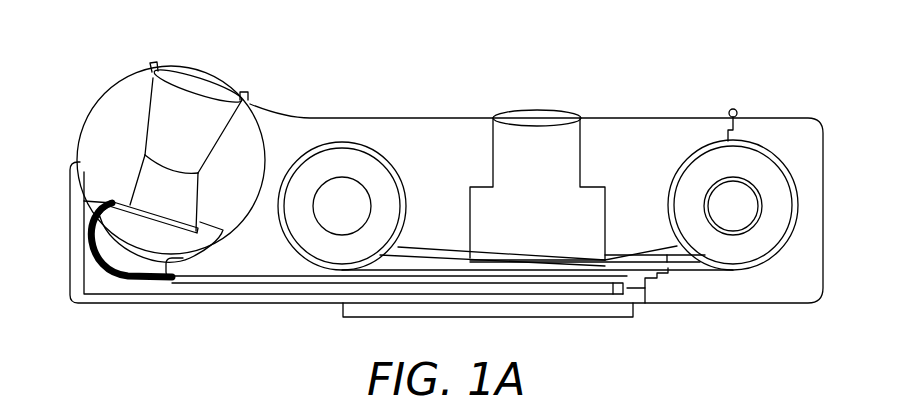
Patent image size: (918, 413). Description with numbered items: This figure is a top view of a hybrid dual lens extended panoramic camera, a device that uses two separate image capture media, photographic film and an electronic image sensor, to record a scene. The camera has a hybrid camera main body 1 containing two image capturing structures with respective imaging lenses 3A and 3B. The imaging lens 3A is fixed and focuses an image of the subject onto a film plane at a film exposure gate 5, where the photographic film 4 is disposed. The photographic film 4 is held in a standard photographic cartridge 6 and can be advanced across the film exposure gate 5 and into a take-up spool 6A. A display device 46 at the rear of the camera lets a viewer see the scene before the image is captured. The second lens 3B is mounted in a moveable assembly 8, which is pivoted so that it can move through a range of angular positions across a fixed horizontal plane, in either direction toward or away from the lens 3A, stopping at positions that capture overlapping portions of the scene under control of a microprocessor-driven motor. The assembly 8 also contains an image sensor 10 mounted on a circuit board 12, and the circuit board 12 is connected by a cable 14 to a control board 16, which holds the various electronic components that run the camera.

The hybrid camera main body 1 is at (660, 130).
The imaging lens 3A is at (547, 110).
The imaging lens 3B is at (196, 78).
The photographic film 4 is at (540, 266).
The film exposure gate 5 is at (546, 222).
The photographic cartridge 6 is at (767, 258).
The take-up spool 6A is at (360, 153).
The moveable assembly 8 is at (120, 110).
The image sensor 10 is at (223, 230).
The circuit board 12 is at (196, 233).
The cable 14 is at (127, 280).
The control board 16 is at (333, 278).
The display device 46 is at (633, 310).